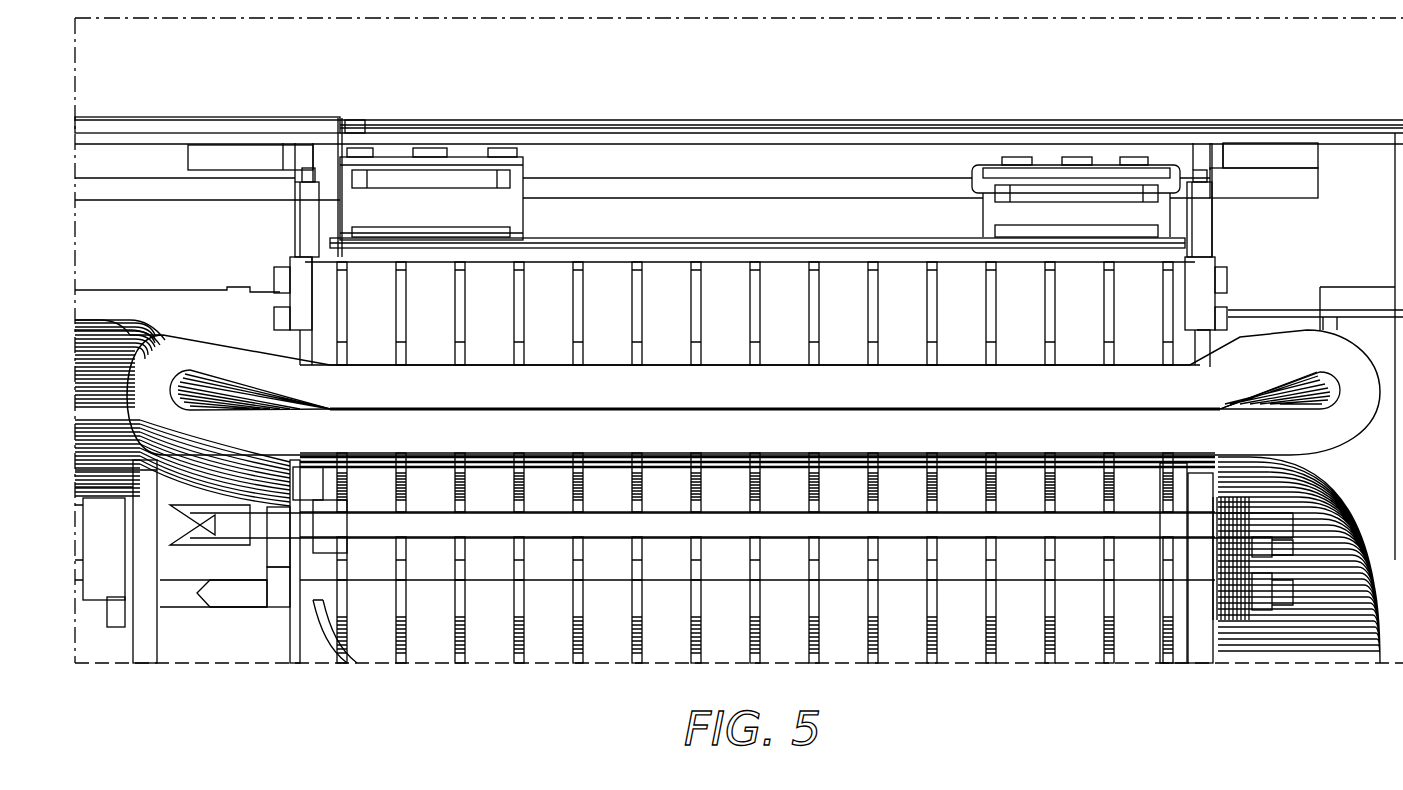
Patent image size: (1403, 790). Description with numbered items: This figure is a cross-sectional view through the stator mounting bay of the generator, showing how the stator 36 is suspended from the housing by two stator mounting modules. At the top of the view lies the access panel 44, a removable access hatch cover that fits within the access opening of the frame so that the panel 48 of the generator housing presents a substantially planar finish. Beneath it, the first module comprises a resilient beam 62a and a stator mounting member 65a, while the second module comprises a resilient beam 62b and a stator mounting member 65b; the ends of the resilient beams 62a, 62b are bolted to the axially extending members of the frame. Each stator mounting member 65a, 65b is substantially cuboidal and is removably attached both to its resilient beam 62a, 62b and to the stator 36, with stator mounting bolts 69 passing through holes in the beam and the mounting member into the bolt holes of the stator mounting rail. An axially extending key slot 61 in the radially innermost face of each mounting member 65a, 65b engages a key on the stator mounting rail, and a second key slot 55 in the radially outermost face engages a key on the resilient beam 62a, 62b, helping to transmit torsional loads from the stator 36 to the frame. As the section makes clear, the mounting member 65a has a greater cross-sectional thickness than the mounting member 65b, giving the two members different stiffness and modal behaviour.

The stator 36 is at (1183, 290).
The access panel 44 is at (703, 123).
The panel 48 is at (105, 120).
The second key slot 55 is at (463, 180).
The key slot 61 is at (430, 237).
The resilient beam 62a is at (345, 185).
The resilient beam 62b is at (1175, 175).
The stator mounting member 65a is at (352, 208).
The stator mounting member 65b is at (1145, 212).
The stator mounting bolt 69 is at (1125, 160).